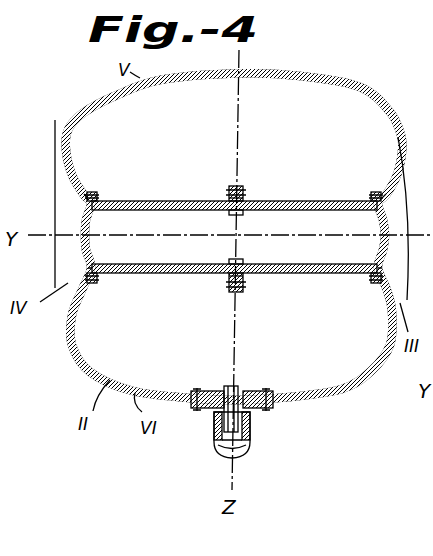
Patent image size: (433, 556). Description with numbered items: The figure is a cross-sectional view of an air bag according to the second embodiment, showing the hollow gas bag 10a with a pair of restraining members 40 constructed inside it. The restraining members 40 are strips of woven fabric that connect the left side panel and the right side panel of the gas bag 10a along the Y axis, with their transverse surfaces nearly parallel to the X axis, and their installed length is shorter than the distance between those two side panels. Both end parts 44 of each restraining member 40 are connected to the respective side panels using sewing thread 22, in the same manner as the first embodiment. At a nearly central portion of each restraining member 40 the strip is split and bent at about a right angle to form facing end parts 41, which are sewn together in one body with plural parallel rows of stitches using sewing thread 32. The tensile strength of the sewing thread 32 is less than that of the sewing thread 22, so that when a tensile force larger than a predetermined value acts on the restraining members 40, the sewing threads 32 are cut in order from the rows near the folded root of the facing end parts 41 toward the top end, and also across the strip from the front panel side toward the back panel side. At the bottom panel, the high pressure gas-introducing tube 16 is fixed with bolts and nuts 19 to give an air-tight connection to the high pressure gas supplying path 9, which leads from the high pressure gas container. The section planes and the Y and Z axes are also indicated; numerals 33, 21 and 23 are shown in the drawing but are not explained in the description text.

The gas bag 10a is at (315, 72).
The restraining member 40 is at (322, 200).
The end part of restraining member 44 is at (96, 191).
The facing end part 41 is at (232, 186).
The upper nut 33 is at (230, 196).
The sewing thread 32 is at (229, 282).
The sewing thread 22 is at (87, 201).
The upper right junction 21 is at (378, 202).
The lower junction 23 is at (85, 270).
The high pressure gas-introducing tube 16 is at (205, 391).
The bolts and nuts 19 is at (258, 391).
The high pressure gas supplying path 9 is at (250, 441).